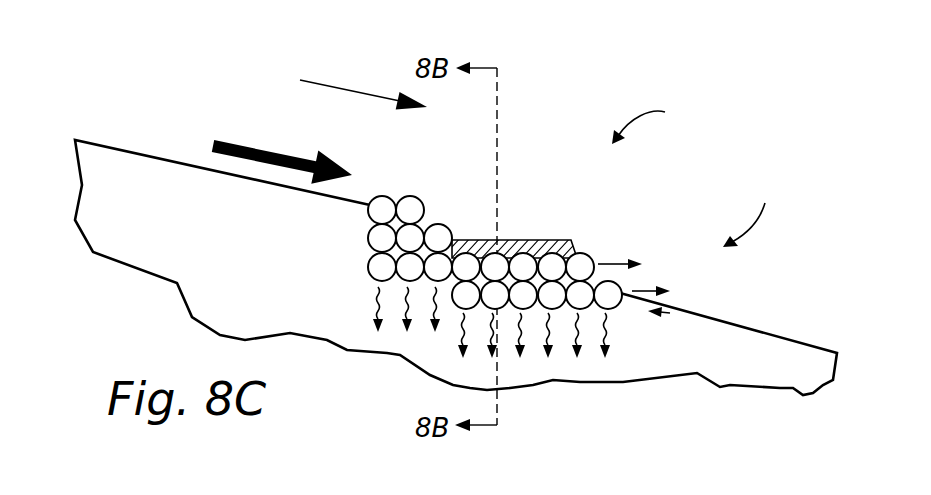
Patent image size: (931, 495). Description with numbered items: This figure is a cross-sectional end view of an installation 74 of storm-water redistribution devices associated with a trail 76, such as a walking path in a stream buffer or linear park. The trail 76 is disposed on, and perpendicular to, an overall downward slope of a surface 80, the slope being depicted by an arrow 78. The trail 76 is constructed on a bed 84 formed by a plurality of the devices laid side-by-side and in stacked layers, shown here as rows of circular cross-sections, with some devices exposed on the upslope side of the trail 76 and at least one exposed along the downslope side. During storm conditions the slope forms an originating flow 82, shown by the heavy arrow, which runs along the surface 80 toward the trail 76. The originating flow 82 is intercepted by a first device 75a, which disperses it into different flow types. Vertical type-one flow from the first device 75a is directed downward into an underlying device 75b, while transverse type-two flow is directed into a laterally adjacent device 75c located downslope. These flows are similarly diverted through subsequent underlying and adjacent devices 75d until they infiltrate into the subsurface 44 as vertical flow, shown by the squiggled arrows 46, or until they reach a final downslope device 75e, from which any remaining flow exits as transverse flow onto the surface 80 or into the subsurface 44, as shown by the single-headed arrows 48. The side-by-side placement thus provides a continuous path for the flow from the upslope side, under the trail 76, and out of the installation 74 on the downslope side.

The subsurface 44 is at (157, 229).
The squiggled arrows 46 is at (467, 318).
The single-headed arrows 48 is at (650, 291).
The installation 74 is at (652, 122).
The first device 75a is at (387, 196).
The underlying device 75b is at (367, 268).
The laterally adjacent device 75c is at (413, 197).
The subsequent underlying and adjacent devices 75d is at (453, 232).
The final downslope device 75e is at (623, 308).
The trail 76 is at (548, 239).
The arrow depicting downward slope 78 is at (357, 92).
The surface 80 is at (175, 160).
The originating flow 82 is at (233, 142).
The bed 84 is at (751, 214).